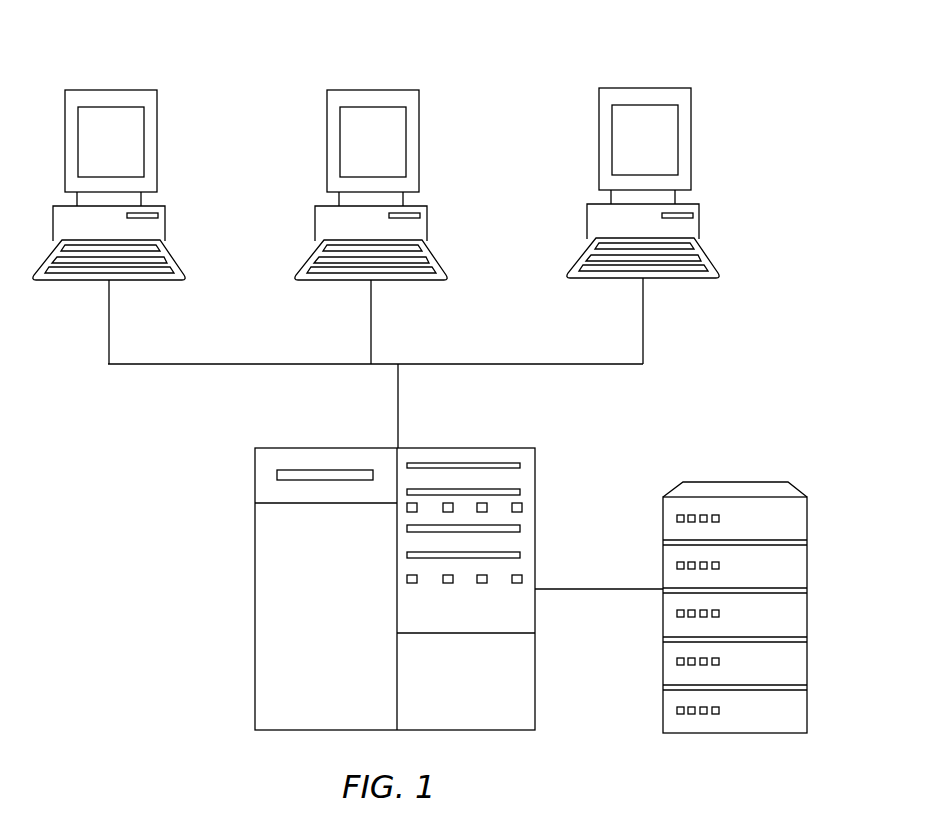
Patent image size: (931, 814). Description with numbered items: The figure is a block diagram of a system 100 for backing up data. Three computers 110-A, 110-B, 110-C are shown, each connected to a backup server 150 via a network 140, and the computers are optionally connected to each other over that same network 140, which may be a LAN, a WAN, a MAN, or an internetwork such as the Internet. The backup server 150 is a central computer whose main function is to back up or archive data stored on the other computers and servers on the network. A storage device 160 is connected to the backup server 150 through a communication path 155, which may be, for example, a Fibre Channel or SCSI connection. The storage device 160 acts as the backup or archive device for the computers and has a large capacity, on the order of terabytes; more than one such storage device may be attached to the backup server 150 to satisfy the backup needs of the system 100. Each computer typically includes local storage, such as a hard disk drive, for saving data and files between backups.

The system 100 is at (276, 58).
The computer 110-A is at (157, 120).
The computer 110-B is at (418, 127).
The computer 110-C is at (693, 127).
The network 140 is at (488, 363).
The backup server 150 is at (492, 446).
The communication path 155 is at (635, 591).
The storage device 160 is at (757, 483).